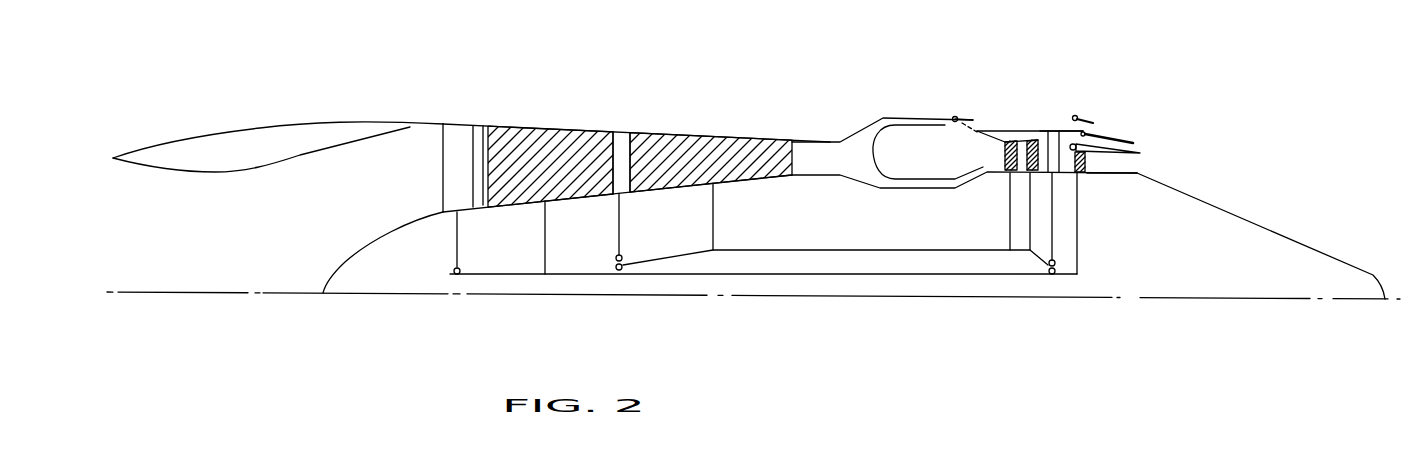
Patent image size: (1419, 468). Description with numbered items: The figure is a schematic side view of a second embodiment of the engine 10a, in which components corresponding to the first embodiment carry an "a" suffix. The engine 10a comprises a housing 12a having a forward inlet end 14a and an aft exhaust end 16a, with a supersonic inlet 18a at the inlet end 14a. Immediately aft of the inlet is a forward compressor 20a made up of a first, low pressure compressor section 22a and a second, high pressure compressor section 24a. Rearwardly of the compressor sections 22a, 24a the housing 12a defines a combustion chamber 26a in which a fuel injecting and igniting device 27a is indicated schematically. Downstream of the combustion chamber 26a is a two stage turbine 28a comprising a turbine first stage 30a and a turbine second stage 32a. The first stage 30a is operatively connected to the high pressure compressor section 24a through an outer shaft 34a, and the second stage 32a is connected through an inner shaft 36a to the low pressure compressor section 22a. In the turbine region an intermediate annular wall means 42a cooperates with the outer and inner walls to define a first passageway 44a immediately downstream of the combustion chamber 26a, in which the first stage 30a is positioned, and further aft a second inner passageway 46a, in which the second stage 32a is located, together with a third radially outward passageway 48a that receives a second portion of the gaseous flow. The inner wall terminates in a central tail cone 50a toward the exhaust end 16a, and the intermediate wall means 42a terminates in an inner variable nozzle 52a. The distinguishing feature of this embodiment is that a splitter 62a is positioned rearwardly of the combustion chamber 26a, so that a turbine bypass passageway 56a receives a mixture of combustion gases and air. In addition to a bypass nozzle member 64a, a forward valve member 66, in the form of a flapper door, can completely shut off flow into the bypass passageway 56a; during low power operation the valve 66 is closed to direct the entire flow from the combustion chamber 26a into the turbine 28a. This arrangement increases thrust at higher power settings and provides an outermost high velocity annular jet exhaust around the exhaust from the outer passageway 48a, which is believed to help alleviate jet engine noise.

The engine 10a is at (823, 102).
The housing 12a is at (913, 98).
The forward inlet end 14a is at (372, 102).
The aft exhaust end 16a is at (1253, 203).
The supersonic inlet 18a is at (198, 203).
The forward compressor 20a is at (627, 103).
The first compressor section 22a is at (613, 126).
The second compressor section 24a is at (792, 138).
The combustion chamber 26a is at (895, 143).
The fuel injecting and igniting device 27a is at (873, 152).
The two stage turbine 28a is at (1022, 125).
The turbine first stage 30a is at (1007, 163).
The turbine second stage 32a is at (1085, 177).
The outer shaft 34a is at (905, 250).
The inner shaft 36a is at (773, 283).
The intermediate annular wall means 42a is at (1100, 158).
The first passageway 44a is at (1005, 158).
The second inner passageway 46a is at (1067, 173).
The third radially outward passageway 48a is at (1133, 145).
The central tail cone 50a is at (1343, 275).
The inner variable nozzle 52a is at (1130, 153).
The turbine bypass passageway 56a is at (1046, 125).
The splitter 62a is at (977, 132).
The bypass nozzle member 64a is at (1095, 122).
The forward valve member 66 is at (958, 118).